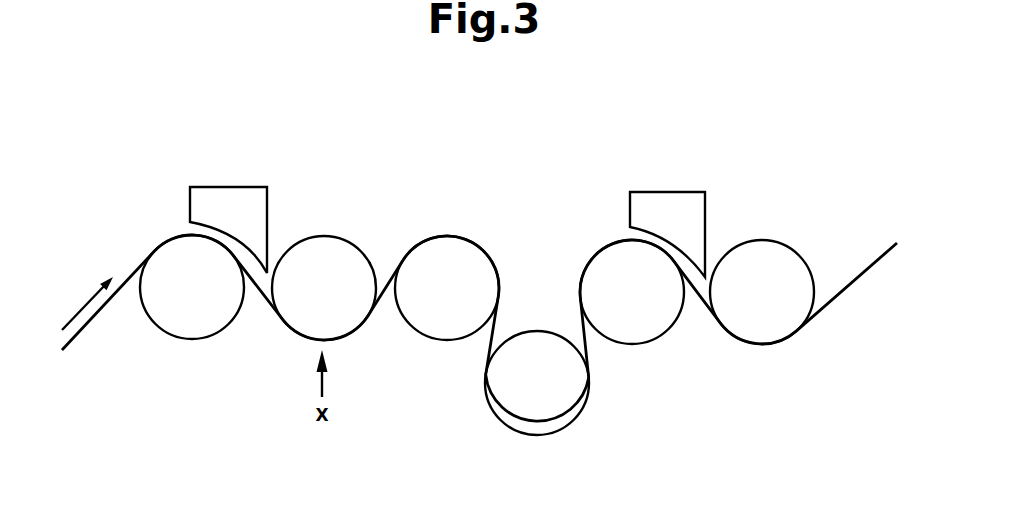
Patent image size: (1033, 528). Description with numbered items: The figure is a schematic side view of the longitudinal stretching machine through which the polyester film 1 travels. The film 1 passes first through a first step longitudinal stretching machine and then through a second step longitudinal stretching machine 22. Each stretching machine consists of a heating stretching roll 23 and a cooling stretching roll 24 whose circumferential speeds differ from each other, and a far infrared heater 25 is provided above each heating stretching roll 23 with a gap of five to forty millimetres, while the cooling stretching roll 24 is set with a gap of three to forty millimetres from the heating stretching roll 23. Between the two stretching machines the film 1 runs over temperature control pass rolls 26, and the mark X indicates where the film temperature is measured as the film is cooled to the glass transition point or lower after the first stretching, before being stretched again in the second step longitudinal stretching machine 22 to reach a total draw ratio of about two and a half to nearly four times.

The polyester film 1 is at (122, 284).
The second step longitudinal stretching machine 22 is at (724, 177).
The heating stretching roll 23 is at (162, 328).
The cooling stretching roll 24 is at (217, 161).
The far infrared heater 25 is at (190, 197).
The guide roller 26 is at (426, 340).